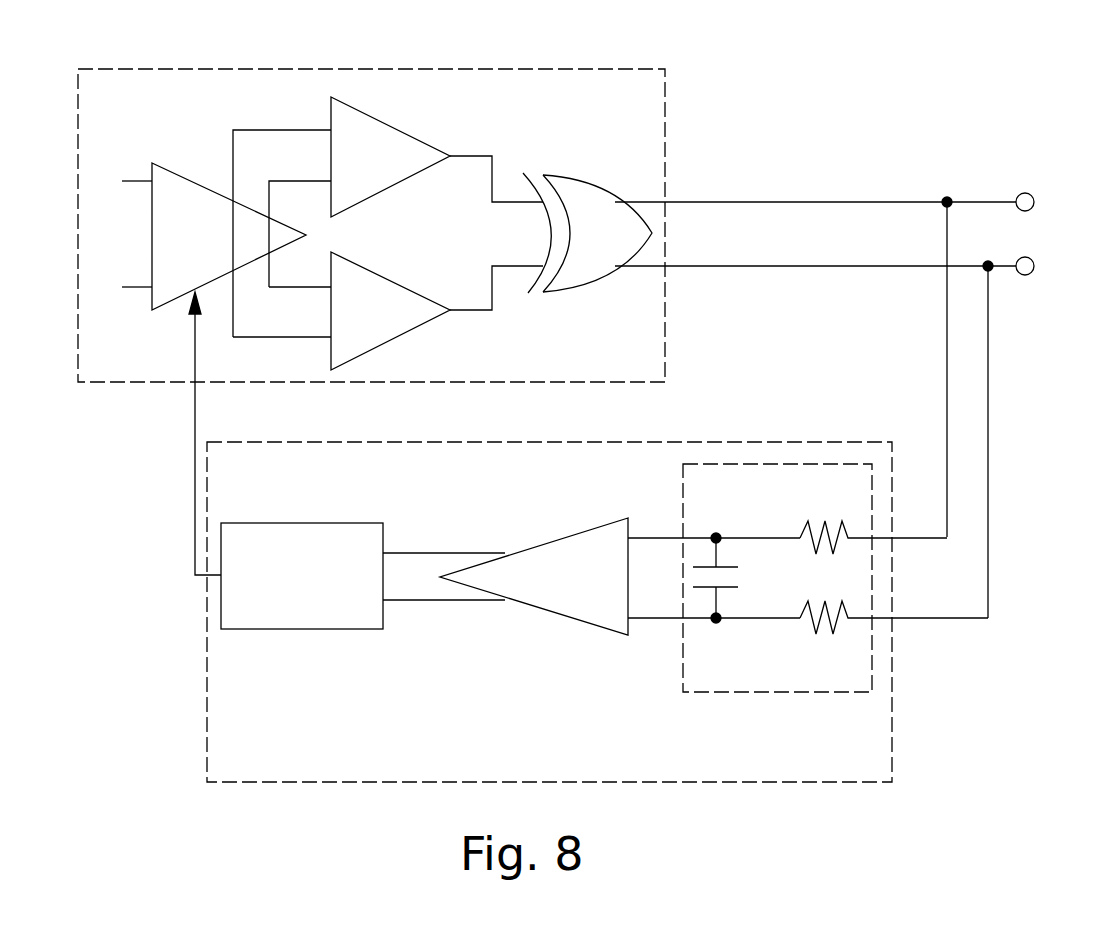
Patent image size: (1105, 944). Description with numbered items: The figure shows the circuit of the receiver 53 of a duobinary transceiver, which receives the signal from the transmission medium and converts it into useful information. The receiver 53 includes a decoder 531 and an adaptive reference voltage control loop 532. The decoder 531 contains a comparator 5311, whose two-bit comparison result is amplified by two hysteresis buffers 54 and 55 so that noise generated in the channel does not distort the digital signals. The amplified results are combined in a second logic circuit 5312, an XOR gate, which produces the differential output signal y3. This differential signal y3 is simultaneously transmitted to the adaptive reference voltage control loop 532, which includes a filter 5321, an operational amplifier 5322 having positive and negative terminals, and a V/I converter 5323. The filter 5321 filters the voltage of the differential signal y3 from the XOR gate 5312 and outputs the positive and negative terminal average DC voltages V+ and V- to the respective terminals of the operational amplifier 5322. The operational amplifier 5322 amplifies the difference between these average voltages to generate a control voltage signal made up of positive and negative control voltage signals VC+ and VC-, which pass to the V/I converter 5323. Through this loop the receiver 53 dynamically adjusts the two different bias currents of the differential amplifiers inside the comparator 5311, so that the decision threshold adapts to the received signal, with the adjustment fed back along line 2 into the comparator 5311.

The receiver 53 is at (870, 88).
The decoder 531 is at (303, 68).
The comparator 5311 is at (212, 187).
The hysteresis buffer 54 is at (383, 120).
The hysteresis buffer 55 is at (397, 280).
The second logic circuit 5312 is at (587, 188).
The adaptive reference voltage control loop 532 is at (317, 782).
The filter 5321 is at (730, 693).
The operational amplifier 5322 is at (535, 533).
The V/I converter 5323 is at (270, 630).
The control signal line 2 is at (208, 498).